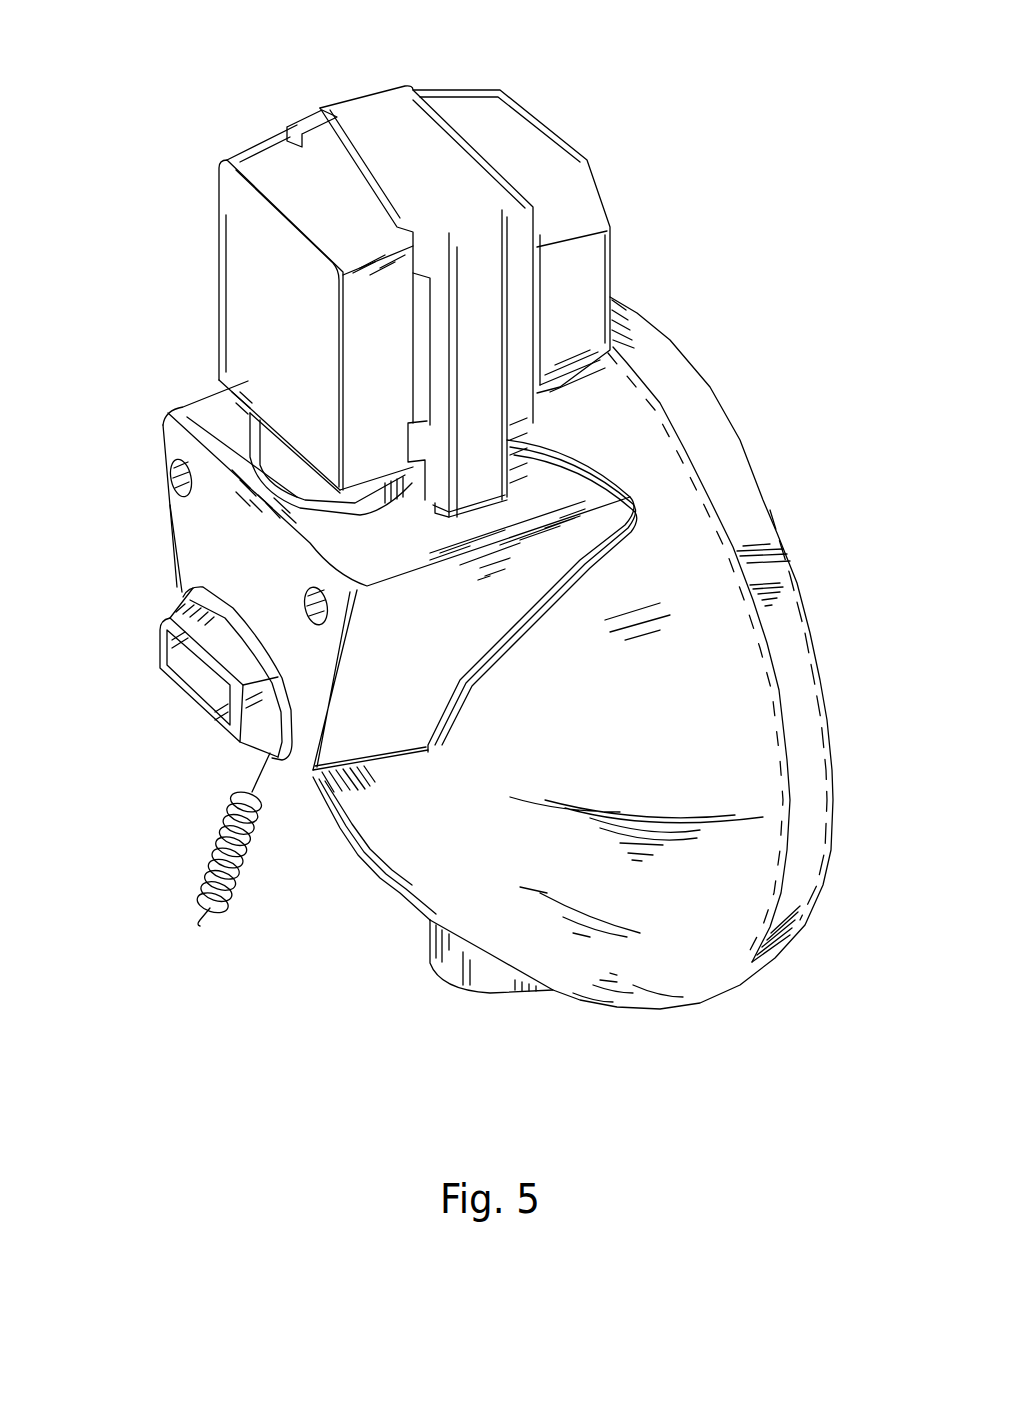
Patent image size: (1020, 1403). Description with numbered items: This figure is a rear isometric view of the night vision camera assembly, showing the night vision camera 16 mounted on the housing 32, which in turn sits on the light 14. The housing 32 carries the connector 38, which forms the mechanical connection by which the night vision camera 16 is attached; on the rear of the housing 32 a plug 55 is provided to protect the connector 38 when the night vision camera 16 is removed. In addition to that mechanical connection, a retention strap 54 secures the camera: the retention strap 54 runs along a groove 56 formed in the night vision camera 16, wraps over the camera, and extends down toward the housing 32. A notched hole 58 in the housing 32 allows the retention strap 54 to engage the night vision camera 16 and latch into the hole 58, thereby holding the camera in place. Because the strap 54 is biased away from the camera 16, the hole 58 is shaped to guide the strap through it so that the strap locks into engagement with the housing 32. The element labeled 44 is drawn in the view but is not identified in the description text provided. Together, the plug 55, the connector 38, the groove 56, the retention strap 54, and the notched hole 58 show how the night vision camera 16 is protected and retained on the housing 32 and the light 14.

The light 14 is at (657, 360).
The night vision camera 16 is at (237, 207).
The housing 32 is at (175, 447).
The connector 38 is at (262, 455).
The spring 44 is at (222, 828).
The retention strap 54 is at (364, 120).
The plug 55 is at (168, 623).
The groove 56 is at (335, 135).
The notched hole 58 is at (437, 513).